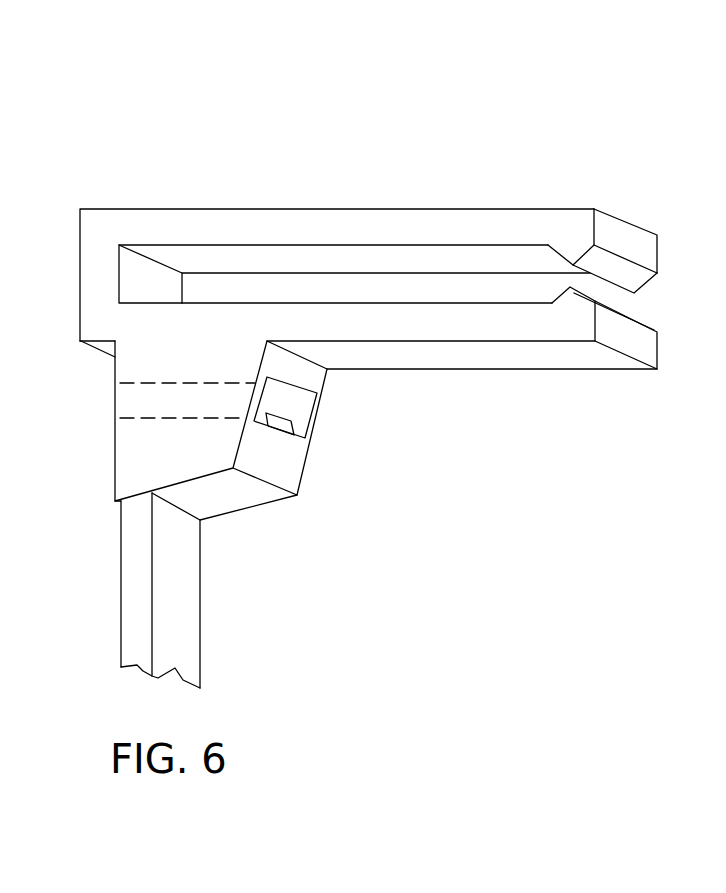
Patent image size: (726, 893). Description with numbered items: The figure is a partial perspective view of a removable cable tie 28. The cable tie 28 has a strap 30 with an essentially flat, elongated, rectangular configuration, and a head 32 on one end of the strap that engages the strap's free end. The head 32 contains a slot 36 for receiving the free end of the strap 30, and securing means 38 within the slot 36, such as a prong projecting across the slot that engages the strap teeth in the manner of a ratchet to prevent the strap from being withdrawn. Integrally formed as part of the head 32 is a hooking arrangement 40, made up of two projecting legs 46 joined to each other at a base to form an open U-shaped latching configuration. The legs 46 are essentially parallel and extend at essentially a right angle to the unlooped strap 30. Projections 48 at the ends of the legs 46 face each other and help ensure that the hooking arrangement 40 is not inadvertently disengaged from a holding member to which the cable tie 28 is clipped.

The cable tie 28 is at (268, 613).
The strap 30 is at (128, 613).
The head 32 is at (127, 456).
The slot 36 is at (303, 399).
The securing means 38 is at (287, 423).
The hooking arrangement 40 is at (186, 186).
The projecting legs 46 is at (489, 222).
The projections 48 is at (638, 280).